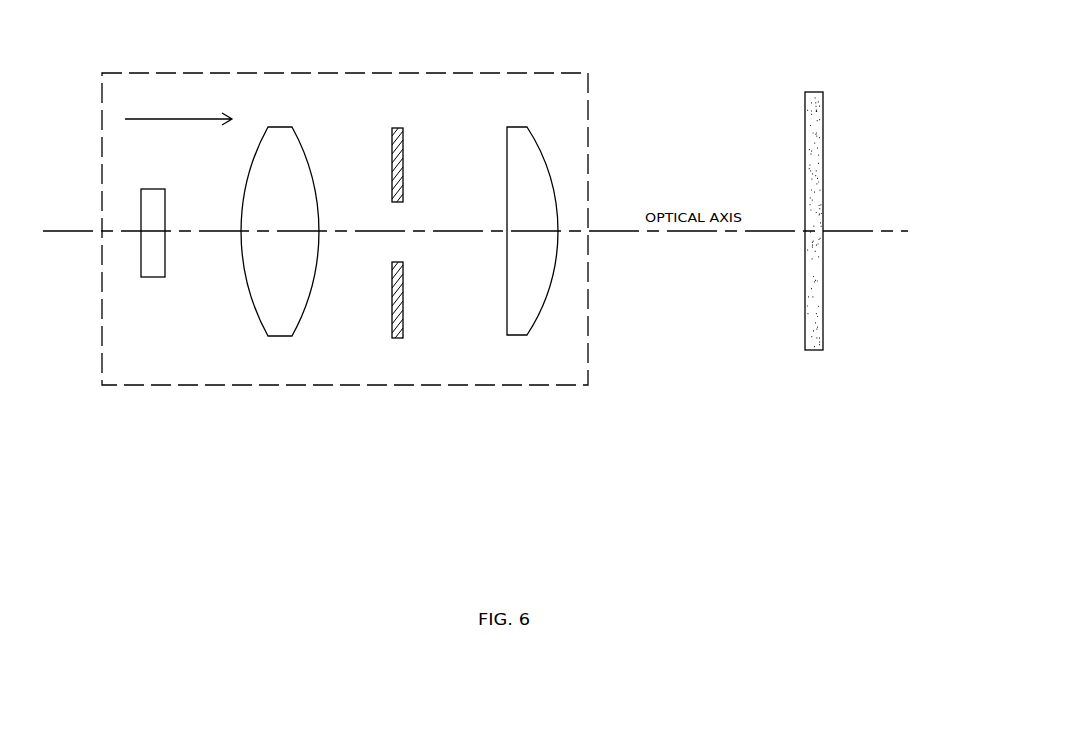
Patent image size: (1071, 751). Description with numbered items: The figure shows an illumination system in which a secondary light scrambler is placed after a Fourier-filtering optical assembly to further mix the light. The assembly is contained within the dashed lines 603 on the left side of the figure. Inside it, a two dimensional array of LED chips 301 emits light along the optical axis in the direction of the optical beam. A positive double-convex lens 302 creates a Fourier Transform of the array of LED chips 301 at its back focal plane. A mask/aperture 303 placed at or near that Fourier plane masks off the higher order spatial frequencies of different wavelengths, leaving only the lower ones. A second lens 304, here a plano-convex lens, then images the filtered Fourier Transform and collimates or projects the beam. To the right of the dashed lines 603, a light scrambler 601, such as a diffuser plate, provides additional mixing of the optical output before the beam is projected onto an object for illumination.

The two dimensional array of LED chips 301 is at (157, 280).
The positive double-convex lens 302 is at (281, 339).
The mask/aperture 303 is at (399, 125).
The second lens 304 is at (516, 125).
The light scrambler 601 is at (811, 192).
The dashed lines 603 is at (363, 72).